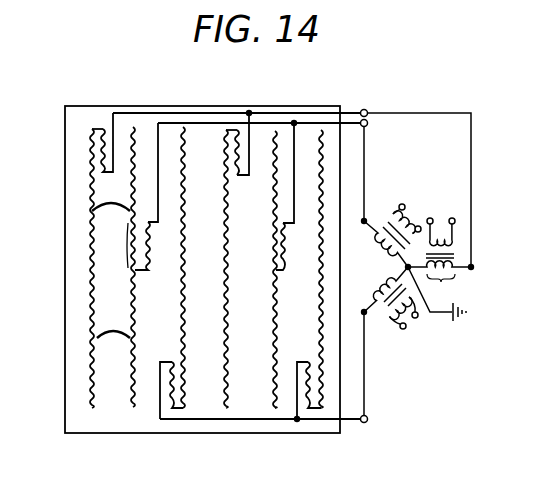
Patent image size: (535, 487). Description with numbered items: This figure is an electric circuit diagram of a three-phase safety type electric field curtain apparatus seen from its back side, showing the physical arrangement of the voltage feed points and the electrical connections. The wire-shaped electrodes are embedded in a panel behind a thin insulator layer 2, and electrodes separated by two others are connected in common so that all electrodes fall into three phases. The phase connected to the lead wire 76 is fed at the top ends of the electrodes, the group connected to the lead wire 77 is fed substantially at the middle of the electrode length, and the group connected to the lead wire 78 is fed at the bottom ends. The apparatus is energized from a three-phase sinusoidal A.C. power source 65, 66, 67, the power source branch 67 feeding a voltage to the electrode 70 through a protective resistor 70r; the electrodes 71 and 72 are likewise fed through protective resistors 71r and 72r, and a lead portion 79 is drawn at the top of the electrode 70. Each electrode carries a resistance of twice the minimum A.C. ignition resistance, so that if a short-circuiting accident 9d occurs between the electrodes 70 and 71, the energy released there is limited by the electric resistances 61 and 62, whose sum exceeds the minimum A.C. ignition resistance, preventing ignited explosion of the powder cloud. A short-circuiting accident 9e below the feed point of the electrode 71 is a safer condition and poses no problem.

The thin insulator layer 2 is at (94, 419).
The lead portion 79 is at (97, 128).
The protective resistor 70r is at (107, 145).
The lead wire 76 is at (211, 112).
The lead wire 77 is at (273, 122).
The lead wire 78 is at (265, 421).
The electric resistance 61 is at (88, 175).
The short-circuiting accident 9d is at (95, 215).
The electric resistance 62 is at (126, 242).
The short-circuiting accident 9e is at (108, 330).
The electrode 70 is at (91, 363).
The electrode 71 is at (133, 387).
The protective resistor 71r is at (152, 259).
The electrode 72 is at (185, 379).
The protective resistor 72r is at (167, 397).
The three-phase A.C. power source 65 is at (384, 236).
The three-phase A.C. power source 66 is at (382, 296).
The power source branch 67 is at (439, 269).